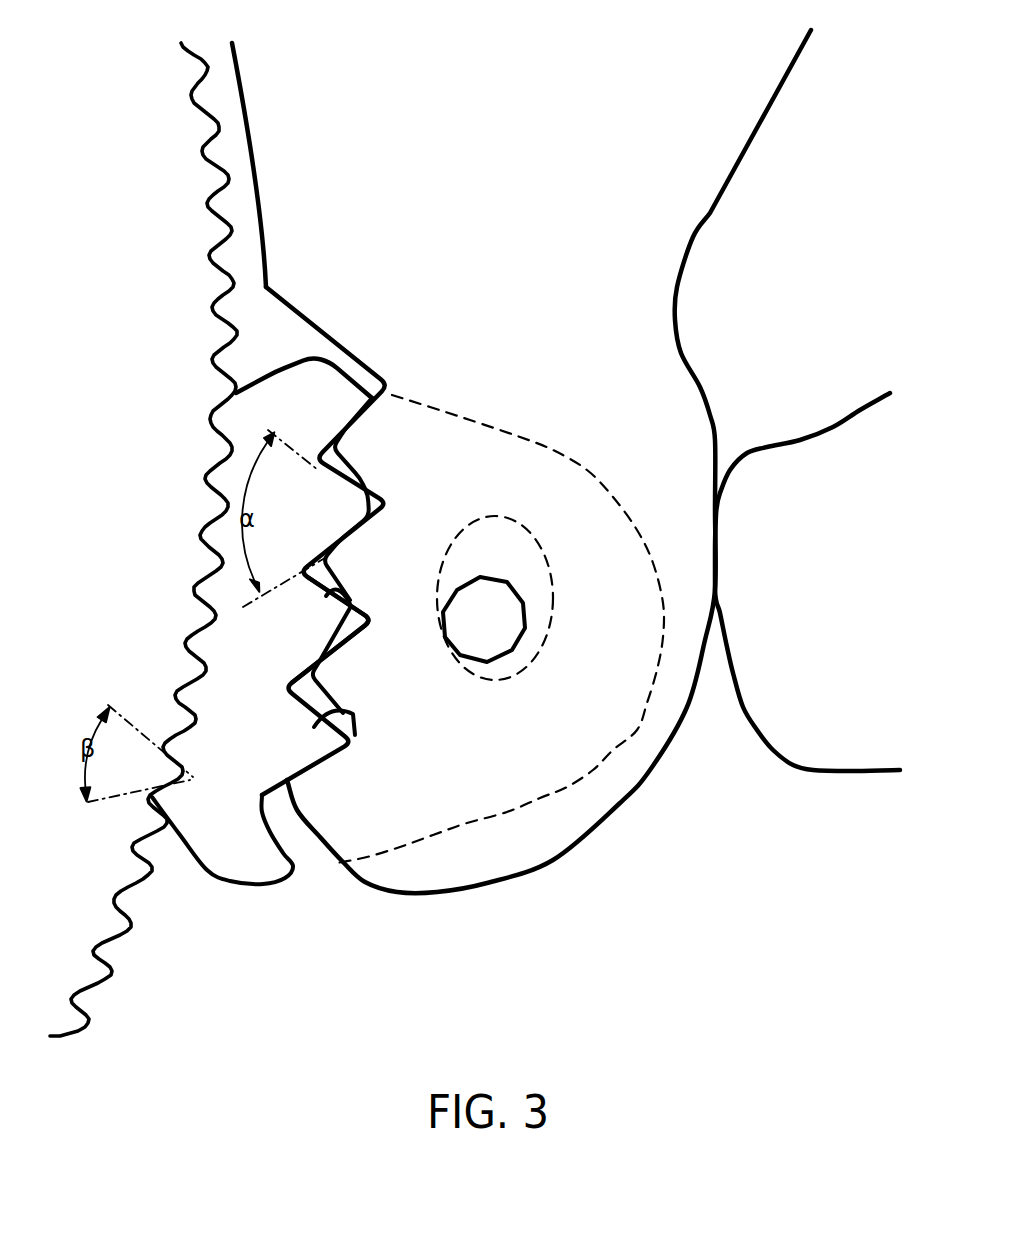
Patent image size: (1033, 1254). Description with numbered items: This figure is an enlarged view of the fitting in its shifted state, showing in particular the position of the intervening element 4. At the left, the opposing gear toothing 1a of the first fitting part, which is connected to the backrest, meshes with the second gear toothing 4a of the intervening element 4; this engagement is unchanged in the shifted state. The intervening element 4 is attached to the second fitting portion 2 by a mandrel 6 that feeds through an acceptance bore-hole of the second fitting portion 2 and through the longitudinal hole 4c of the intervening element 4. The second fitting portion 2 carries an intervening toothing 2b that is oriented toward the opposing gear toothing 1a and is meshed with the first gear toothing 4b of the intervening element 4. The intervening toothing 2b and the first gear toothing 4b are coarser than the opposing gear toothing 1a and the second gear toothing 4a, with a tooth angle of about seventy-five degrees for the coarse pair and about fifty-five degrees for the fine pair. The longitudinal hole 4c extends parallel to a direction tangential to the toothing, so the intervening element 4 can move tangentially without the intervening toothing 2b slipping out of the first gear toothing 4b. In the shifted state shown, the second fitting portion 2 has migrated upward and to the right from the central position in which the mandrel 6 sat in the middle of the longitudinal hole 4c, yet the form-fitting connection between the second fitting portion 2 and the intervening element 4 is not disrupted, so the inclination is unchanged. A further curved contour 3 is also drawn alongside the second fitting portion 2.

The opposing gear toothing 1a is at (208, 258).
The second fitting portion 2 is at (689, 209).
The intervening toothing 2b is at (328, 604).
The guide member 3 is at (853, 758).
The intervening element 4 is at (537, 432).
The second gear toothing 4a is at (235, 446).
The first gear toothing 4b is at (347, 718).
The longitudinal hole 4c is at (552, 560).
The mandrel 6 is at (517, 637).